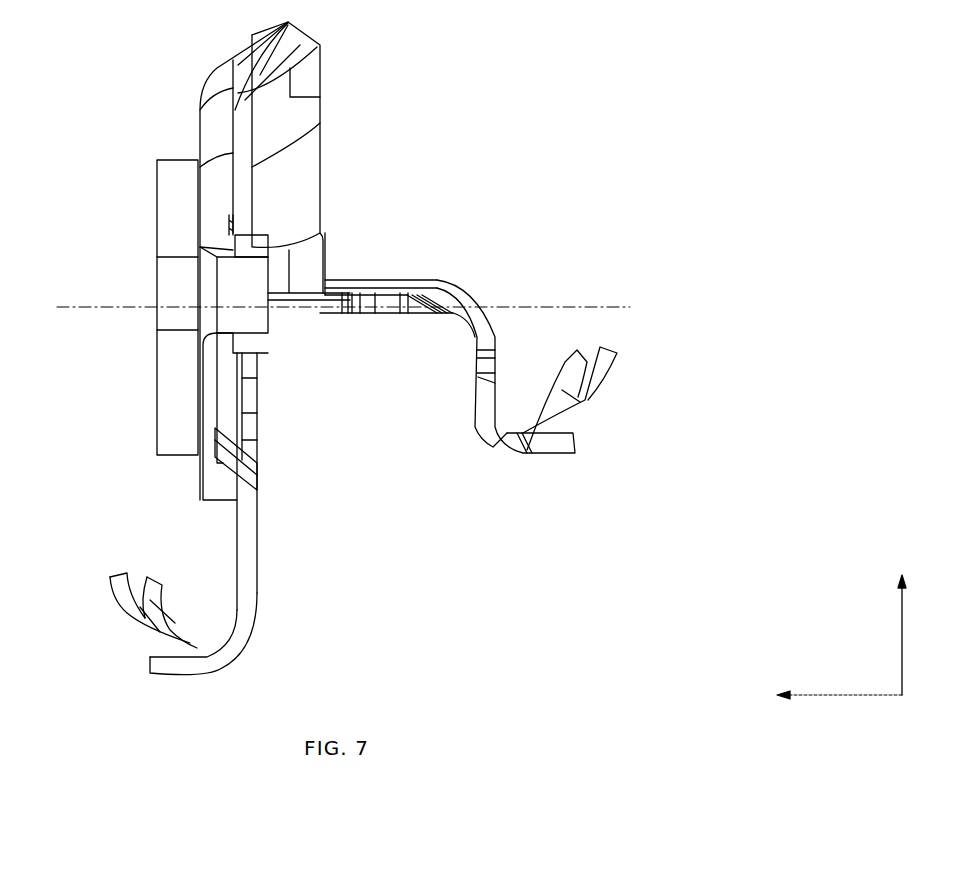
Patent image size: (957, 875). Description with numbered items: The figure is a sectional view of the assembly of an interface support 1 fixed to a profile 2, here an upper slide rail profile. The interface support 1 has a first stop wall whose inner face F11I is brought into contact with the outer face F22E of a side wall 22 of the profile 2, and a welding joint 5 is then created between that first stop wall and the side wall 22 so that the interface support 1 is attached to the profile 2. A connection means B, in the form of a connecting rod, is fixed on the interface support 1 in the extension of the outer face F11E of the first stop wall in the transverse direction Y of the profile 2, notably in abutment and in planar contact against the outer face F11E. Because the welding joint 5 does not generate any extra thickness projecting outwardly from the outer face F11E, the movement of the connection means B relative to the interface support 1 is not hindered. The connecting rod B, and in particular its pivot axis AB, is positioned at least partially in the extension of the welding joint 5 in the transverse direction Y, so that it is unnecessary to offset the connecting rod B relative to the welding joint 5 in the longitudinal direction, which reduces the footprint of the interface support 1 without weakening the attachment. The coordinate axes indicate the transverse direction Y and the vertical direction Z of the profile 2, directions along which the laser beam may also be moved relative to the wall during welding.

The interface support 1 is at (368, 90).
The profile 2 is at (445, 272).
The welding joint 5 is at (257, 485).
The side wall 22 is at (245, 550).
The connection means B is at (143, 212).
The pivot axis AB is at (323, 291).
The inner face F11I is at (243, 427).
The outer face F11E is at (202, 485).
The outer face F22E is at (237, 568).
The transverse direction Y is at (824, 680).
The vertical direction Z is at (890, 619).